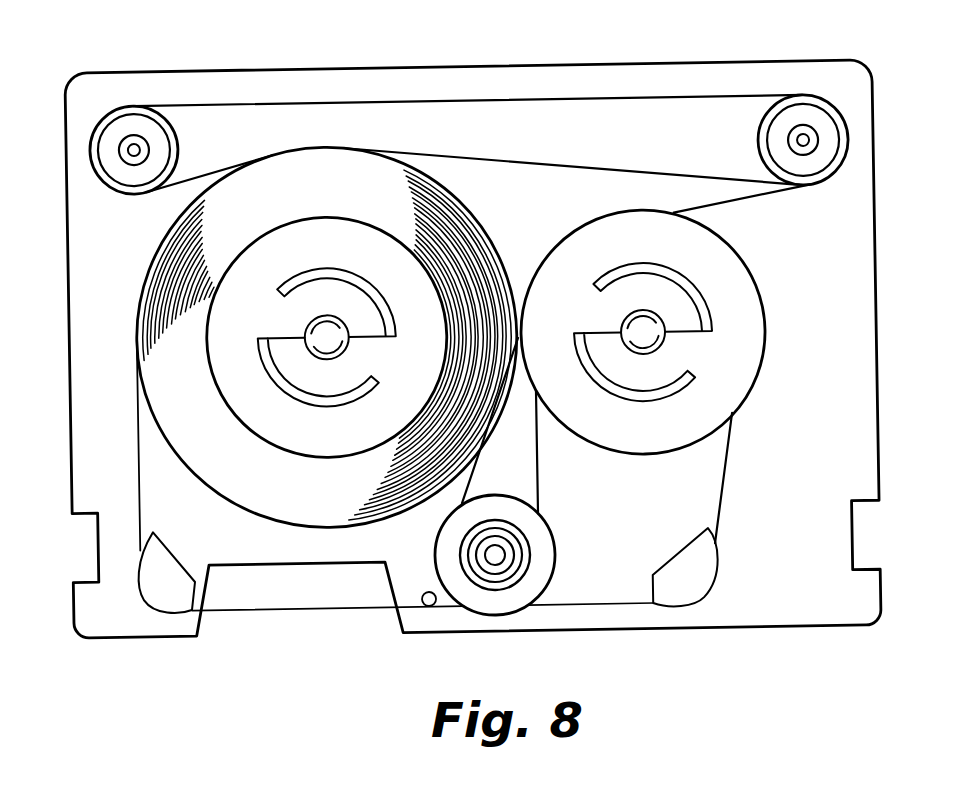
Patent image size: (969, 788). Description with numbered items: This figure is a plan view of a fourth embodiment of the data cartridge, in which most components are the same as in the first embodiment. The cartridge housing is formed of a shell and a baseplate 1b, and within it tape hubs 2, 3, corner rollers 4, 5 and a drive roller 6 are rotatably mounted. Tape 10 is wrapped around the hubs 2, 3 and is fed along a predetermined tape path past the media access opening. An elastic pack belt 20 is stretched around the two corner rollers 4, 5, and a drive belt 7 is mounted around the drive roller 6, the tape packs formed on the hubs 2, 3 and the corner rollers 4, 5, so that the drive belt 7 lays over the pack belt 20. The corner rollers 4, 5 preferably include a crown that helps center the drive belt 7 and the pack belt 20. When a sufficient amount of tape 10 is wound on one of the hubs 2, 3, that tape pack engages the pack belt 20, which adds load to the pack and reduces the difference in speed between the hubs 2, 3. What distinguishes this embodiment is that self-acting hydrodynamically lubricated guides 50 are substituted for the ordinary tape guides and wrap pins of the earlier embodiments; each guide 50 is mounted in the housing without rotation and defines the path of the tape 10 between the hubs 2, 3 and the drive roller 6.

The baseplate 1b is at (602, 65).
The tape hub 2 is at (223, 370).
The tape hub 3 is at (745, 358).
The corner roller 4 is at (91, 148).
The corner roller 5 is at (819, 107).
The drive roller 6 is at (515, 595).
The drive belt 7 is at (538, 485).
The tape 10 is at (140, 473).
The elastic pack belt 20 is at (429, 102).
The self-acting hydrodynamically lubricated guide 50 is at (165, 595).